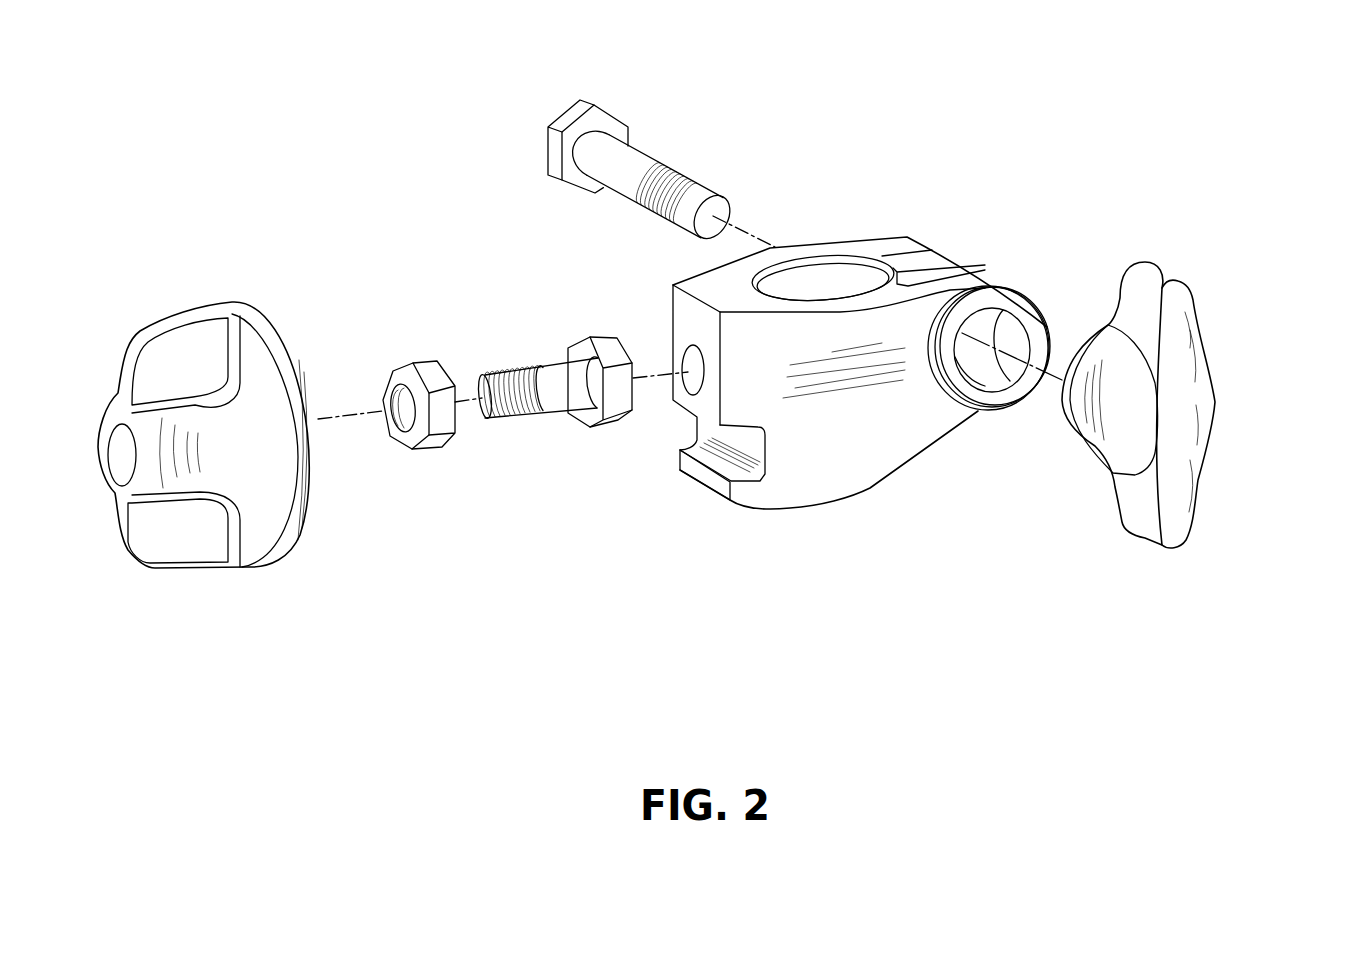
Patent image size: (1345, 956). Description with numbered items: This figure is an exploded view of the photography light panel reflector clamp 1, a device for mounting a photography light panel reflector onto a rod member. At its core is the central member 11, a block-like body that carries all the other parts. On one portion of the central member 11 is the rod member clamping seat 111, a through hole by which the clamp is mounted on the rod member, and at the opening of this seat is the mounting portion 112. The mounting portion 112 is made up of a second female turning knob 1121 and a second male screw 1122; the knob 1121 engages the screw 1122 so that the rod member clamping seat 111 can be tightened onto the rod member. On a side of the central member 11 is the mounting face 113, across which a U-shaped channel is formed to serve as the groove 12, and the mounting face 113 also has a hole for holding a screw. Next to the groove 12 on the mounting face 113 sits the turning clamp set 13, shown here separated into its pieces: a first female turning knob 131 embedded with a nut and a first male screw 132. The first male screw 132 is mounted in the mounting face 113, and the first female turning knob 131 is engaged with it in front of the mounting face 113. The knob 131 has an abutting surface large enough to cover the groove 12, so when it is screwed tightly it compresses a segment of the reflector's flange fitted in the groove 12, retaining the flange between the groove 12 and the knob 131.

The photography light panel reflector clamp 1 is at (918, 136).
The central member 11 is at (887, 463).
The rod member clamping seat 111 is at (825, 262).
The mounting portion 112 is at (908, 247).
The second female turning knob 1121 is at (1187, 340).
The second male screw 1122 is at (635, 158).
The mounting face 113 is at (680, 312).
The groove 12 is at (767, 458).
The turning clamp set 13 is at (420, 213).
The first female turning knob 131 is at (390, 383).
The first male screw 132 is at (552, 373).